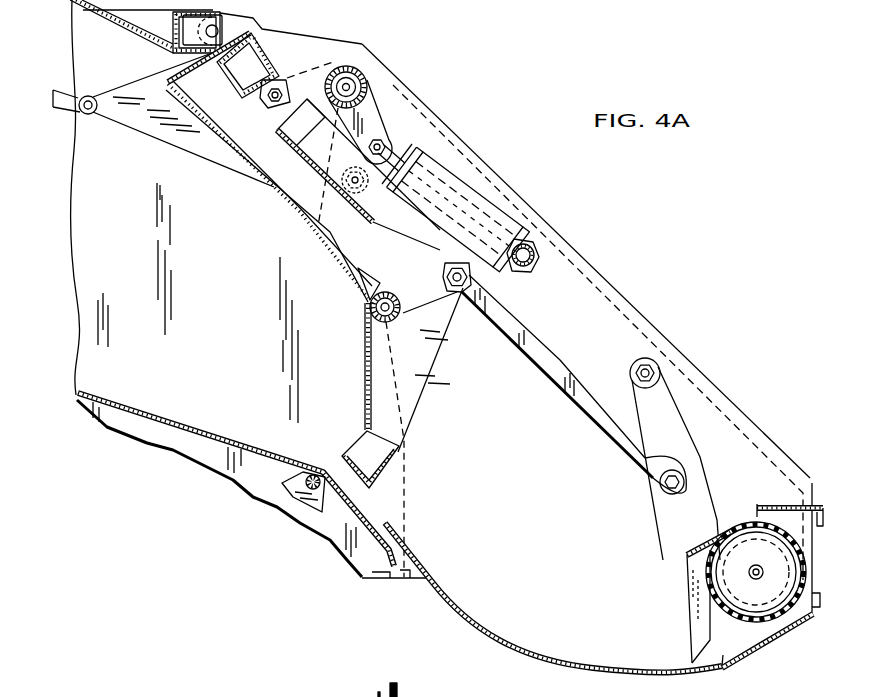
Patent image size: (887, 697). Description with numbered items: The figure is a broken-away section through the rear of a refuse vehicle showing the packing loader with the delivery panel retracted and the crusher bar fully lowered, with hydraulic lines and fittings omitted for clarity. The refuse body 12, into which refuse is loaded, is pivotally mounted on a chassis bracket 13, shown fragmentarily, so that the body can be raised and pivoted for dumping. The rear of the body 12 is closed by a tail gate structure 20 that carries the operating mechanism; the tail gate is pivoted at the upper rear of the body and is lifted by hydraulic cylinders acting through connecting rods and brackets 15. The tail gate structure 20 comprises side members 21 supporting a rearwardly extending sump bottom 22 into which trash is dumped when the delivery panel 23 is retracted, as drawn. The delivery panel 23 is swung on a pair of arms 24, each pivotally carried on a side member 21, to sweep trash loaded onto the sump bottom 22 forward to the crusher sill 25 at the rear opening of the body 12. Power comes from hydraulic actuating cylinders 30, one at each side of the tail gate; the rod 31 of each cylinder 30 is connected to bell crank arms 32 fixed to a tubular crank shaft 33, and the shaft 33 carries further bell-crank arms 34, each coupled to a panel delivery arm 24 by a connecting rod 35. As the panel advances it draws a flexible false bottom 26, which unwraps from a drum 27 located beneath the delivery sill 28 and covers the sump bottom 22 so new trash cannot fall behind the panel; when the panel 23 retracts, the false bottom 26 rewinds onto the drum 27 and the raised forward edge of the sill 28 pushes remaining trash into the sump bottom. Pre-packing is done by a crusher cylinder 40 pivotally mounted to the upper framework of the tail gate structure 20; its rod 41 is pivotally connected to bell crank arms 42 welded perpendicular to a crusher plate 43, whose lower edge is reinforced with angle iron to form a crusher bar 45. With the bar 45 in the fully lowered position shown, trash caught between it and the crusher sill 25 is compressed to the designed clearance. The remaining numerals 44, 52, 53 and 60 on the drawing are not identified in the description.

The body 12 is at (92, 376).
The chassis bracket 13 is at (277, 503).
The connecting rods and brackets 15 is at (127, 115).
The tail gate structure 20 is at (650, 325).
The side members 21 is at (567, 292).
The sump bottom 22 is at (560, 660).
The delivery panel 23 is at (693, 583).
The arms 24 is at (697, 500).
The crusher sill 25 is at (332, 542).
The flexible false bottom 26 is at (773, 613).
The drum 27 is at (752, 603).
The delivery sill 28 is at (780, 504).
The hydraulic actuating cylinders 30 is at (470, 212).
The rod 31 is at (408, 160).
The bell crank arms 32 is at (365, 126).
The tubular crank shaft 33 is at (342, 65).
The bell-crank arms 34 is at (380, 142).
The connecting rod 35 is at (538, 353).
The crusher cylinder 40 is at (313, 137).
The crusher cylinder rod 41 is at (377, 301).
The bell crank arms 42 is at (440, 323).
The crusher plate 43 is at (367, 383).
The pivot 44 is at (370, 327).
The crusher bar 45 is at (377, 470).
The mounting block 52 is at (275, 65).
The clevis 53 is at (530, 243).
The ground 60 is at (408, 696).